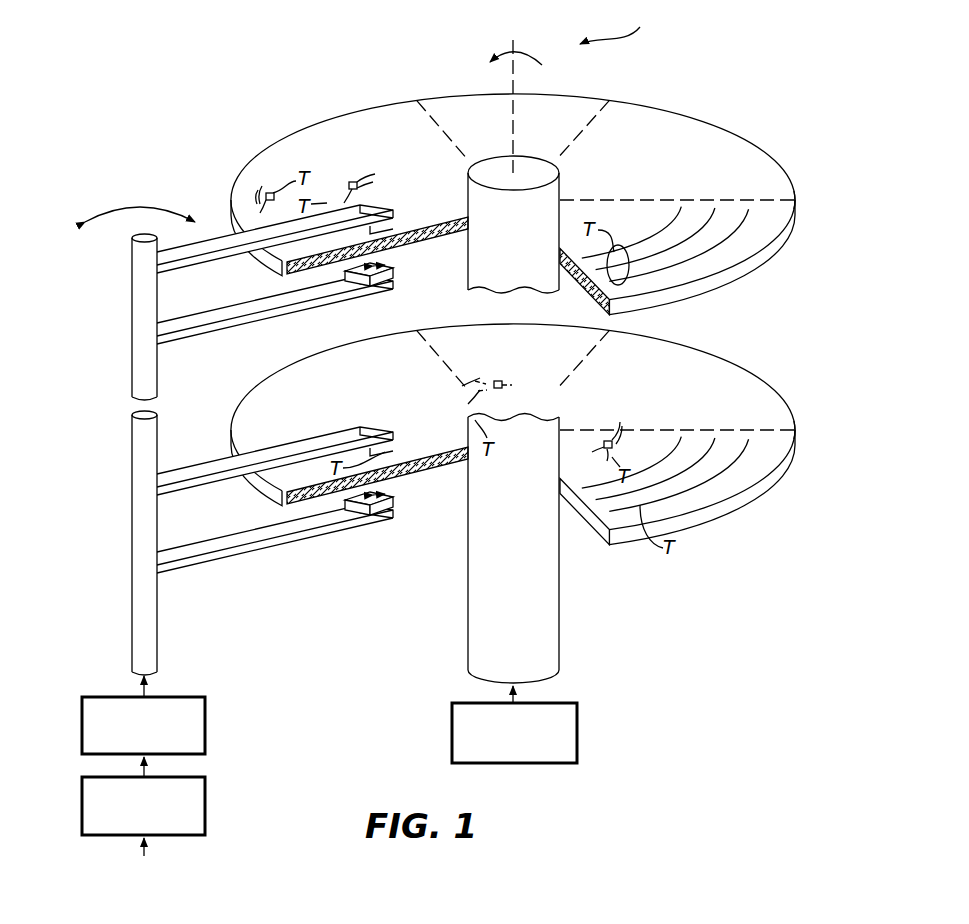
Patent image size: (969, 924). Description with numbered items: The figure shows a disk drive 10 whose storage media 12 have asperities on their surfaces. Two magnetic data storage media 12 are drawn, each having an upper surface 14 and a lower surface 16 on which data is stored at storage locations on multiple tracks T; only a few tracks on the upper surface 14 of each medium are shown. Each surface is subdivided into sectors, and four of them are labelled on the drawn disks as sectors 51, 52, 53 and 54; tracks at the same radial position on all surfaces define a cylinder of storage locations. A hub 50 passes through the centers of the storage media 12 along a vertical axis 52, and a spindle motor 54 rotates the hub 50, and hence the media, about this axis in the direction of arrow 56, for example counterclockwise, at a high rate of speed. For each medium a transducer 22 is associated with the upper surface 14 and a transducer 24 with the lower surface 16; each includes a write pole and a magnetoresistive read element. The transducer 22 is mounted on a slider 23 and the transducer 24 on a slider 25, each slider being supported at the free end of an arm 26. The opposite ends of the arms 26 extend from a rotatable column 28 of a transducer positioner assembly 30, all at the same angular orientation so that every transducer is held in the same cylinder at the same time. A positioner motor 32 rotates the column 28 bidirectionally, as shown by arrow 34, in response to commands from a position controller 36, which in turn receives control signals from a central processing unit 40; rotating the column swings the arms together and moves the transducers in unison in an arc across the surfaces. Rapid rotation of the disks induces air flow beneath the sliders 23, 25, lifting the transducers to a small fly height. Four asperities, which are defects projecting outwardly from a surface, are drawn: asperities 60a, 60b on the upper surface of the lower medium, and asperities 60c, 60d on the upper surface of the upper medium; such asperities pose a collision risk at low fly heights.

The disk drive 10 is at (620, 24).
The data storage media 12 is at (750, 141).
The upper surface 14 is at (762, 181).
The lower surface 16 is at (748, 277).
The transducer 22 is at (320, 272).
The slider 23 is at (400, 218).
The transducer 24 is at (397, 262).
The slider 25 is at (393, 285).
The arm 26 is at (235, 335).
The rotatable column 28 is at (132, 374).
The transducer positioner assembly 30 is at (108, 497).
The positioner motor 32 is at (82, 729).
The arrow 34 is at (140, 208).
The position controller 36 is at (82, 818).
The central processing unit 40 is at (153, 860).
The hub 50 is at (560, 630).
The sector 51 is at (658, 224).
The vertical axis 52 is at (690, 162).
The sector 53 is at (552, 134).
The spindle motor 54 is at (577, 738).
The arrow 56 is at (505, 55).
The asperity 60a is at (604, 443).
The asperity 60b is at (494, 383).
The asperity 60c is at (350, 183).
The asperity 60d is at (266, 195).